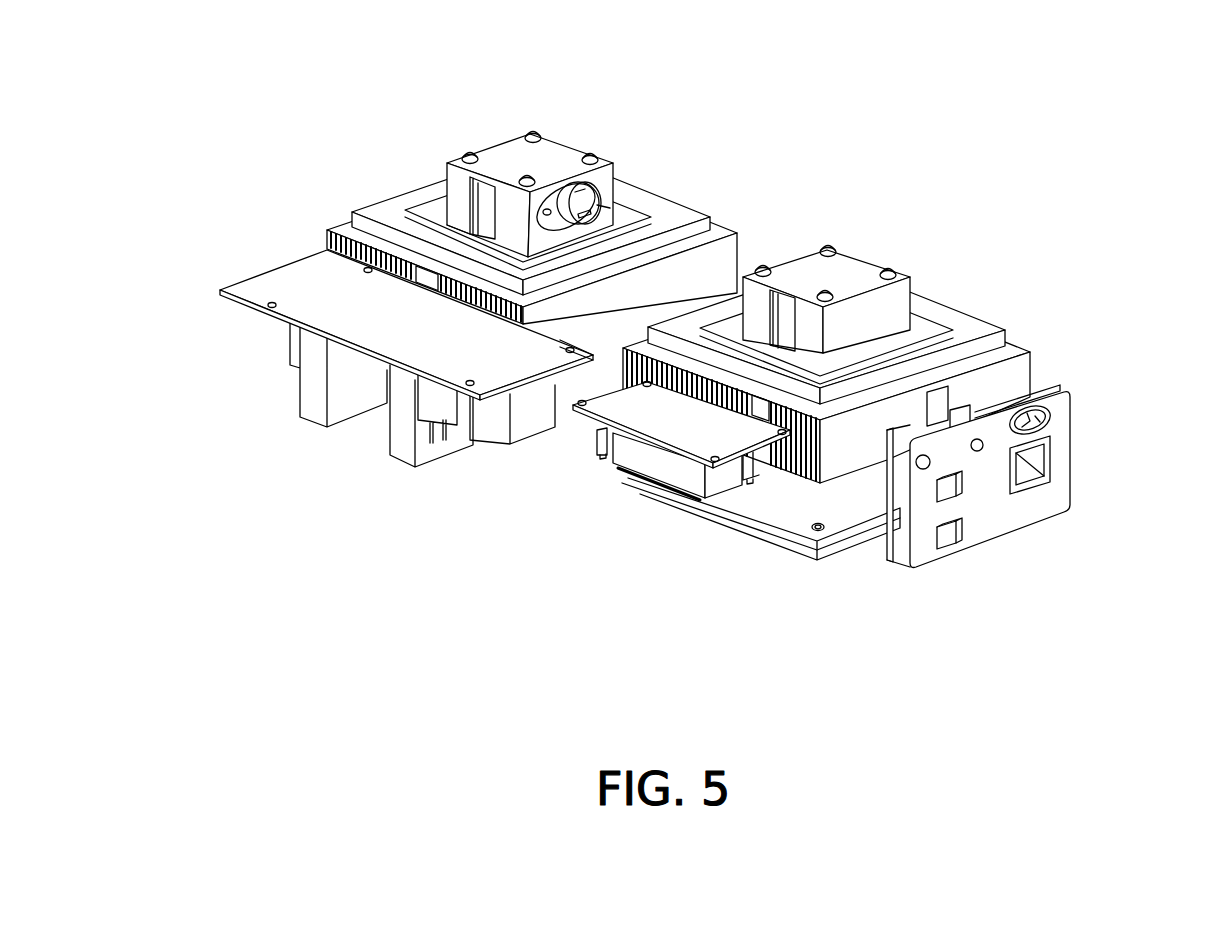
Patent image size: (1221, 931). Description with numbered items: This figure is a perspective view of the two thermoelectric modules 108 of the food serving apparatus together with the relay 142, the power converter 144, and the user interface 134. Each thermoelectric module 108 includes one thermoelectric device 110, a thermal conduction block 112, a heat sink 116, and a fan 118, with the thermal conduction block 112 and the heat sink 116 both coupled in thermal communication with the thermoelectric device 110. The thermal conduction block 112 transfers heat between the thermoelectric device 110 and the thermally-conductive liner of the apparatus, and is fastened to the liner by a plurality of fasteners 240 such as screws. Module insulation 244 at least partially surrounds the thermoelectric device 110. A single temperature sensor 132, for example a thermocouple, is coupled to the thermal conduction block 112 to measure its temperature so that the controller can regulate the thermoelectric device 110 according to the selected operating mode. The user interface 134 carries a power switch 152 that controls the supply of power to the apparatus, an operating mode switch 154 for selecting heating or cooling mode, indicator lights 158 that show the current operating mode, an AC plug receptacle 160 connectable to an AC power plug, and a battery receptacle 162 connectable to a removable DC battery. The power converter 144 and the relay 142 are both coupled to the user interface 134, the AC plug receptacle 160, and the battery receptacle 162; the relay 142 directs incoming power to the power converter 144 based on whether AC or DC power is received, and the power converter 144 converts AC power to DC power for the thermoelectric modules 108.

The thermoelectric module 108 is at (685, 324).
The thermoelectric device 110 is at (443, 212).
The thermal conduction block 112 is at (651, 208).
The heat sink 116 is at (690, 270).
The fan 118 is at (827, 492).
The temperature sensor 132 is at (600, 190).
The user interface 134 is at (1031, 505).
The relay 142 is at (658, 425).
The power converter 144 is at (330, 305).
The power switch 152 is at (950, 549).
The operating mode switch 154 is at (955, 503).
The indicator lights 158 is at (1030, 386).
The AC plug receptacle 160 is at (1047, 477).
The battery receptacle 162 is at (1047, 427).
The fasteners 240 is at (463, 157).
The module insulation 244 is at (757, 523).